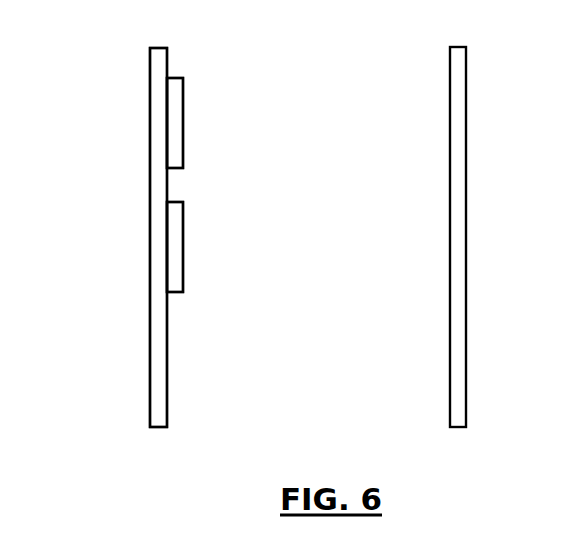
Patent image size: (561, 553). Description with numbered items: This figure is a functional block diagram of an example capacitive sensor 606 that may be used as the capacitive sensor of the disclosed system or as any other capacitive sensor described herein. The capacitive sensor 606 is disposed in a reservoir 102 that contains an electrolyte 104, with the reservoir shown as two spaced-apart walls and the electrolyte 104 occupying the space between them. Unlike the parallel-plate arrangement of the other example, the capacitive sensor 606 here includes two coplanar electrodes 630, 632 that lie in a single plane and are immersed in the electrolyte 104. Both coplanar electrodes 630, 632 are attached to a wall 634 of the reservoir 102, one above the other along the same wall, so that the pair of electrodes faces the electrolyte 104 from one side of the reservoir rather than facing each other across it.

The reservoir 102 is at (278, 99).
The electrolyte 104 is at (348, 267).
The capacitive sensor 606 is at (218, 197).
The coplanar electrode 630 is at (183, 125).
The coplanar electrode 632 is at (183, 248).
The wall 634 is at (150, 240).